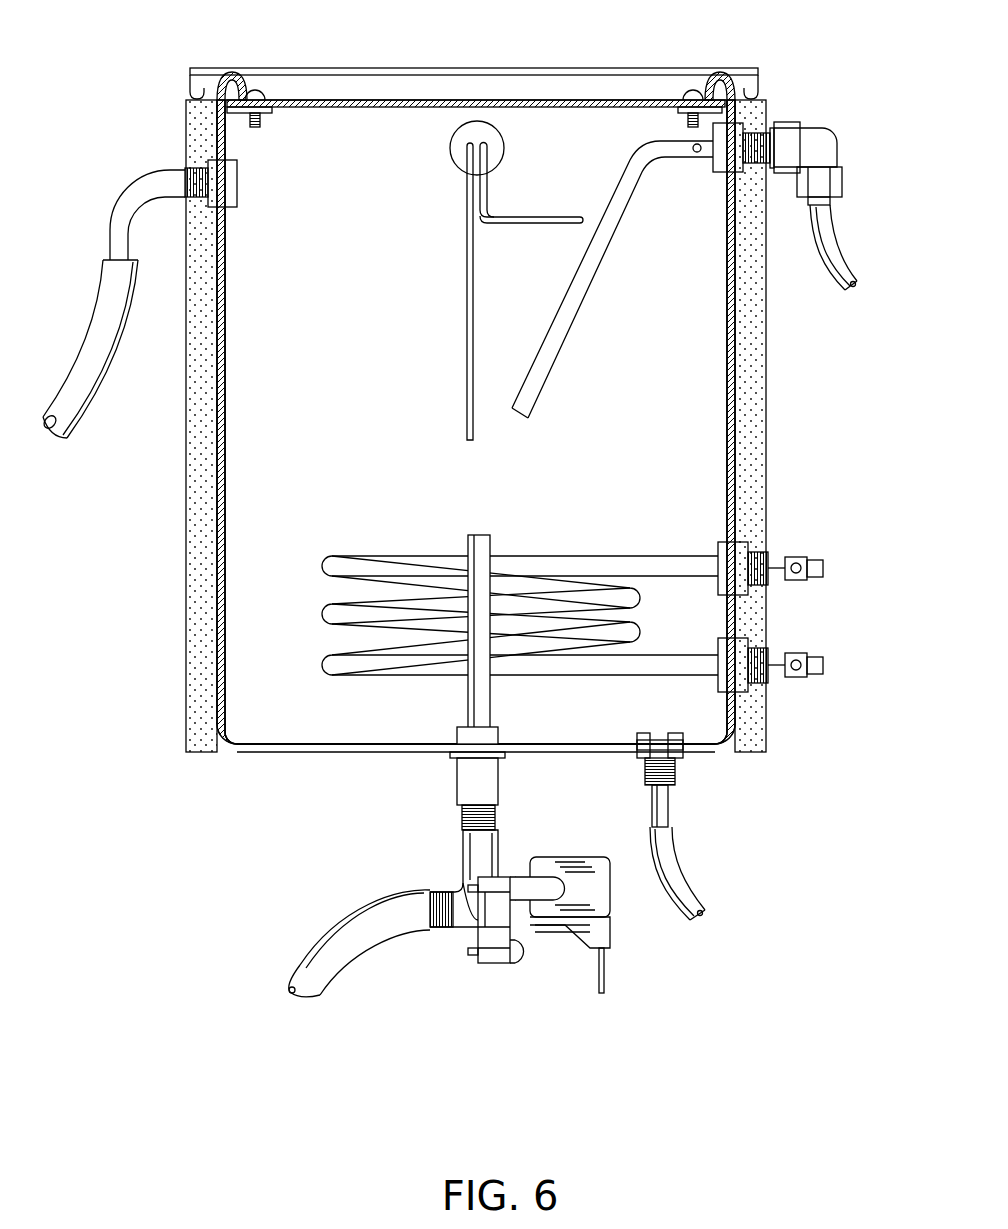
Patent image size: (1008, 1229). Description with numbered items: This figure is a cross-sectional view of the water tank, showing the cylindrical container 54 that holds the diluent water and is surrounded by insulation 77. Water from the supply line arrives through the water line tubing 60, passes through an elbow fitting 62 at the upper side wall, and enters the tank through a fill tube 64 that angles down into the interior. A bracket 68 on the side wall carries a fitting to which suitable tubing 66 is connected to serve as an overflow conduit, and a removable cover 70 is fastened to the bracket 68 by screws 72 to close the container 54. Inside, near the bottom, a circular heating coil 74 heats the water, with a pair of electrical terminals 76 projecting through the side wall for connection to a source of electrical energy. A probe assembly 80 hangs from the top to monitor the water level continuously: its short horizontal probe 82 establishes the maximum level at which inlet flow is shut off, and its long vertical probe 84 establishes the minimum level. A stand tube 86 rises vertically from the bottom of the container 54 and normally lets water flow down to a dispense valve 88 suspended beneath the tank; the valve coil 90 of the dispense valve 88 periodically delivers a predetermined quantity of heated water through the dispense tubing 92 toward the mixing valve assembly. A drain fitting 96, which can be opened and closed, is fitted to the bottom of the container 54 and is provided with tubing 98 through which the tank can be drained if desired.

The container 54 is at (296, 752).
The water line tubing 60 is at (848, 262).
The elbow fitting 62 is at (835, 148).
The fill tube 64 is at (540, 384).
The tubing 66 is at (80, 362).
The bracket 68 is at (228, 228).
The removable cover 70 is at (490, 68).
The screws 72 is at (258, 92).
The heating coil 74 is at (325, 560).
The electrical terminals 76 is at (825, 568).
The insulation 77 is at (190, 665).
The probe assembly 80 is at (450, 150).
The short horizontal probe 82 is at (525, 217).
The long vertical probe 84 is at (468, 340).
The stand tube 86 is at (490, 545).
The dispense valve 88 is at (490, 965).
The valve coil 90 is at (612, 925).
The dispense tubing 92 is at (315, 968).
The drain fitting 96 is at (678, 778).
The tubing 98 is at (690, 895).